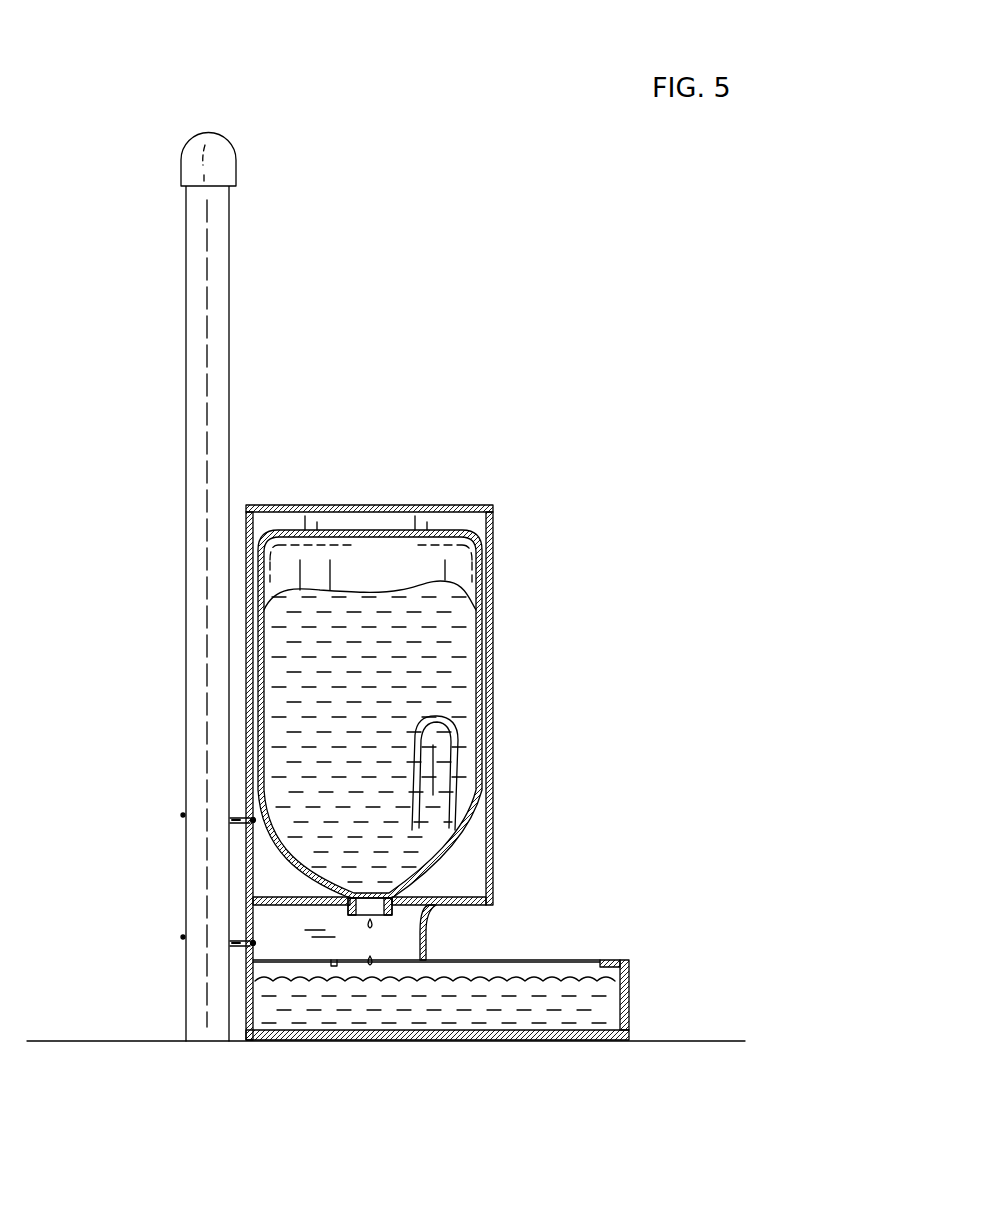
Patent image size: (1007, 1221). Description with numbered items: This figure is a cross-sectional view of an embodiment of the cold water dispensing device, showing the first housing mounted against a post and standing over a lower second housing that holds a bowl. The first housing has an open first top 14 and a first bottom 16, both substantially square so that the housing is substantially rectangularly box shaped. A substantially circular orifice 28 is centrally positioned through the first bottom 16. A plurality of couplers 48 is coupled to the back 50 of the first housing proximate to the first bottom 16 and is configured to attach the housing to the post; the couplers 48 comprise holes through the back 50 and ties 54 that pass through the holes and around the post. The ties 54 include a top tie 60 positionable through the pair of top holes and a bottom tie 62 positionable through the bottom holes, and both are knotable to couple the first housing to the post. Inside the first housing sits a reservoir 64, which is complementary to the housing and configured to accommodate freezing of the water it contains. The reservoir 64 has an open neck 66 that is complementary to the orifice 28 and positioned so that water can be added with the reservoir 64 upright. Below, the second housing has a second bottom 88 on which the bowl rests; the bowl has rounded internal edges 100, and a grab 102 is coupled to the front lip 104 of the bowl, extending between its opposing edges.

The first top 14 is at (358, 503).
The first bottom 16 is at (457, 892).
The orifice 28 is at (373, 898).
The couplers 48 is at (243, 824).
The back 50 is at (243, 610).
The ties 54 is at (232, 827).
The top tie 60 is at (245, 818).
The bottom tie 62 is at (242, 948).
The reservoir 64 is at (484, 533).
The open neck 66 is at (397, 918).
The second bottom 88 is at (335, 1043).
The internal edges 100 is at (268, 1028).
The grab 102 is at (611, 957).
The front lip 104 is at (631, 957).